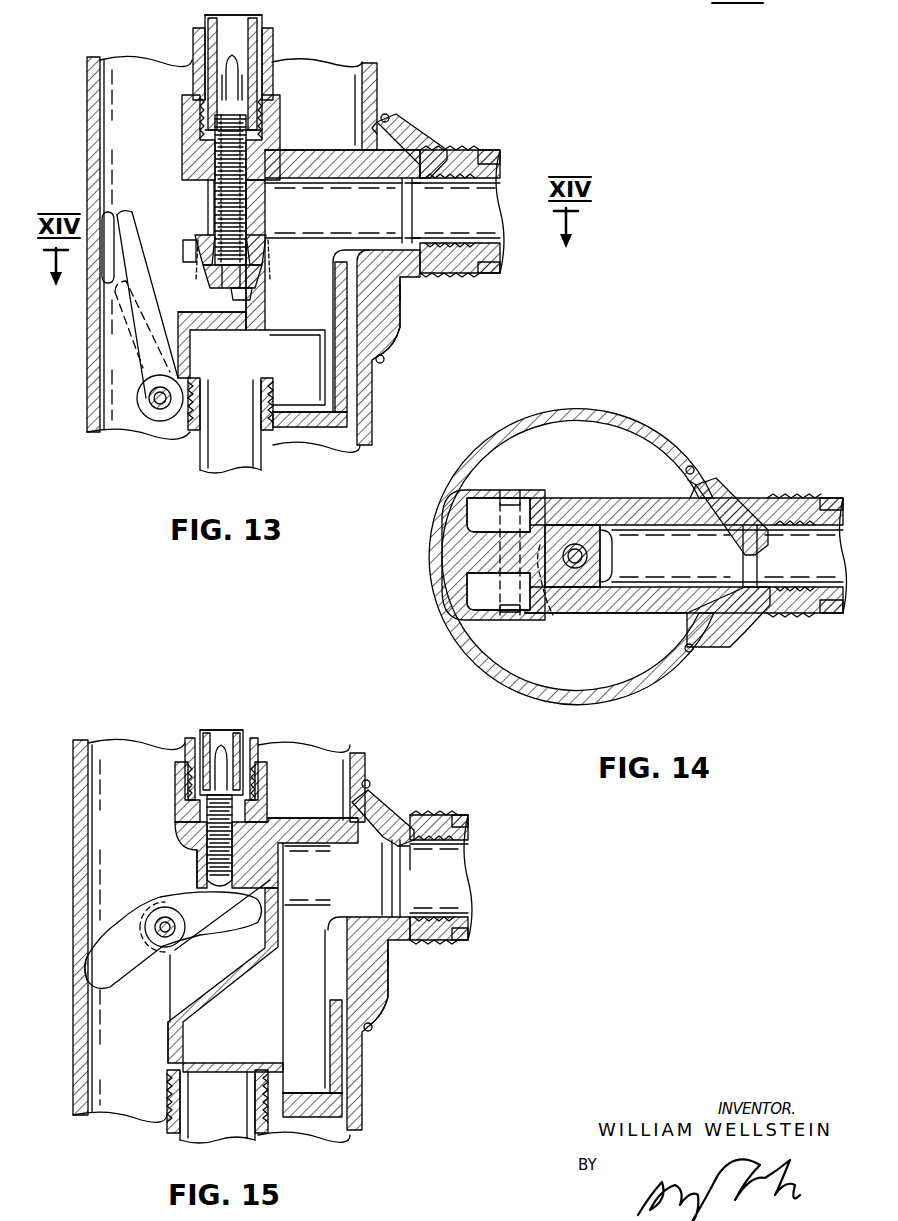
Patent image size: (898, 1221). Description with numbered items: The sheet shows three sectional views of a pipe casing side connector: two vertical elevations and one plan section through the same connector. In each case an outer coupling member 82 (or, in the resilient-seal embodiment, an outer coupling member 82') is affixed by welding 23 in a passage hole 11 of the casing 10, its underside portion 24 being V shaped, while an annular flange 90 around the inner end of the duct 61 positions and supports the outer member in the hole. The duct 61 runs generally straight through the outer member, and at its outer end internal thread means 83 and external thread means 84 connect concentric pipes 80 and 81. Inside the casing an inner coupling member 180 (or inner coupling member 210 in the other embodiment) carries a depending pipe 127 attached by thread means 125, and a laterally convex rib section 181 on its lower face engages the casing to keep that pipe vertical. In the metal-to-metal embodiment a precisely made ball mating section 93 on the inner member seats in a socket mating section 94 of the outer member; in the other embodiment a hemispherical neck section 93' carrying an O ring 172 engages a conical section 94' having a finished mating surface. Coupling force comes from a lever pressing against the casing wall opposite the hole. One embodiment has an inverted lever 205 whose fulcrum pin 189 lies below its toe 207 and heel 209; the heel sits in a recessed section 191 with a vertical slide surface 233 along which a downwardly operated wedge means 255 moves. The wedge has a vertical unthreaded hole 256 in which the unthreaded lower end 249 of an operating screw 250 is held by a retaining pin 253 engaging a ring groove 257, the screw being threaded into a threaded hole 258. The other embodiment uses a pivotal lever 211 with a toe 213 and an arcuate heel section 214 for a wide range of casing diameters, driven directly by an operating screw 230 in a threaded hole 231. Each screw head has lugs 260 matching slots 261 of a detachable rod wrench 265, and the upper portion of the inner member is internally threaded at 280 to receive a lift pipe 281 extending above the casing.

In FIG. 13, the casing 10 is at (378, 73).
In FIG. 14, the casing 10 is at (585, 410).
In FIG. 15, the casing 10 is at (72, 762).
In FIG. 13, the passage hole 11 is at (348, 285).
In FIG. 14, the passage hole 11 is at (688, 630).
In FIG. 15, the passage hole 11 is at (345, 945).
In FIG. 13, the welding 23 is at (380, 120).
In FIG. 14, the welding 23 is at (692, 466).
In FIG. 15, the welding 23 is at (368, 780).
In FIG. 13, the underside portion 24 is at (400, 330).
In FIG. 15, the underside portion 24 is at (390, 990).
In FIG. 13, the duct 61 is at (466, 221).
In FIG. 14, the duct 61 is at (766, 556).
In FIG. 15, the duct 61 is at (436, 876).
In FIG. 13, the concentric pipe 80 is at (502, 245).
In FIG. 14, the concentric pipe 80 is at (835, 602).
In FIG. 15, the concentric pipe 80 is at (470, 915).
In FIG. 13, the concentric pipe 81 is at (496, 270).
In FIG. 14, the concentric pipe 81 is at (831, 495).
In FIG. 15, the concentric pipe 81 is at (452, 942).
In FIG. 13, the outer coupling member 82 is at (428, 304).
In FIG. 14, the outer coupling member 82 is at (732, 498).
In FIG. 15, the outer coupling member 82' is at (421, 968).
In FIG. 13, the internal thread means 83 is at (454, 171).
In FIG. 14, the internal thread means 83 is at (797, 590).
In FIG. 15, the internal thread means 83 is at (422, 915).
In FIG. 13, the external thread means 84 is at (473, 150).
In FIG. 14, the external thread means 84 is at (797, 497).
In FIG. 15, the external thread means 84 is at (430, 815).
In FIG. 13, the flange 90 is at (377, 252).
In FIG. 14, the flange 90 is at (692, 498).
In FIG. 15, the flange 90 is at (348, 918).
In FIG. 13, the ball type mating section 93 is at (414, 174).
In FIG. 14, the ball type mating section 93 is at (729, 556).
In FIG. 15, the hemispherical neck section 93' is at (370, 877).
In FIG. 13, the socket type mating section 94 is at (427, 167).
In FIG. 14, the socket type mating section 94 is at (728, 619).
In FIG. 15, the conical section 94' is at (407, 820).
In FIG. 13, the thread means 125 is at (267, 393).
In FIG. 15, the thread means 125 is at (270, 1078).
In FIG. 13, the depending pipe 127 is at (265, 455).
In FIG. 15, the depending pipe 127 is at (172, 1135).
In FIG. 15, the O ring 172 is at (285, 846).
In FIG. 13, the inner coupling member 180 is at (299, 152).
In FIG. 14, the inner coupling member 180 is at (615, 612).
In FIG. 13, the laterally convex rib section 181 is at (350, 418).
In FIG. 15, the laterally convex rib section 181 is at (346, 1102).
In FIG. 13, the fulcrum pin 189 is at (142, 412).
In FIG. 14, the fulcrum pin 189 is at (500, 614).
In FIG. 15, the fulcrum pin 189 is at (165, 927).
In FIG. 13, the recessed section 191 is at (195, 245).
In FIG. 15, the recessed section 191 is at (196, 873).
In FIG. 13, the inverted lever 205 is at (122, 358).
In FIG. 14, the inverted lever 205 is at (536, 528).
In FIG. 13, the toe portion 207 is at (117, 200).
In FIG. 14, the toe portion 207 is at (468, 488).
In FIG. 13, the heel portion 209 is at (214, 276).
In FIG. 14, the heel portion 209 is at (555, 600).
In FIG. 15, the inner coupling member 210 is at (160, 1043).
In FIG. 15, the pivotal lever 211 is at (117, 950).
In FIG. 15, the toe 213 is at (98, 988).
In FIG. 15, the arcuate heel section 214 is at (250, 902).
In FIG. 15, the operating screw 230 is at (262, 818).
In FIG. 15, the threaded hole 231 is at (208, 830).
In FIG. 13, the vertical slide surface 233 is at (247, 212).
In FIG. 13, the unthreaded lower end 249 is at (103, 213).
In FIG. 13, the operating screw 250 is at (215, 195).
In FIG. 14, the operating screw 250 is at (600, 555).
In FIG. 13, the retaining pin 253 is at (247, 252).
In FIG. 14, the retaining pin 253 is at (606, 573).
In FIG. 13, the wedge means 255 is at (237, 285).
In FIG. 14, the wedge means 255 is at (576, 524).
In FIG. 13, the vertical unthreaded hole 256 is at (218, 240).
In FIG. 14, the vertical unthreaded hole 256 is at (606, 537).
In FIG. 13, the ring groove 257 is at (248, 262).
In FIG. 14, the ring groove 257 is at (575, 575).
In FIG. 13, the threaded hole 258 is at (222, 165).
In FIG. 13, the lugs 260 is at (222, 78).
In FIG. 15, the lugs 260 is at (250, 758).
In FIG. 13, the slots 261 is at (246, 68).
In FIG. 15, the slots 261 is at (225, 732).
In FIG. 13, the rod wrench 265 is at (258, 17).
In FIG. 15, the rod wrench 265 is at (246, 734).
In FIG. 13, the internal threads 280 is at (280, 112).
In FIG. 15, the internal threads 280 is at (258, 789).
In FIG. 13, the lift pipe 281 is at (210, 42).
In FIG. 15, the lift pipe 281 is at (193, 735).